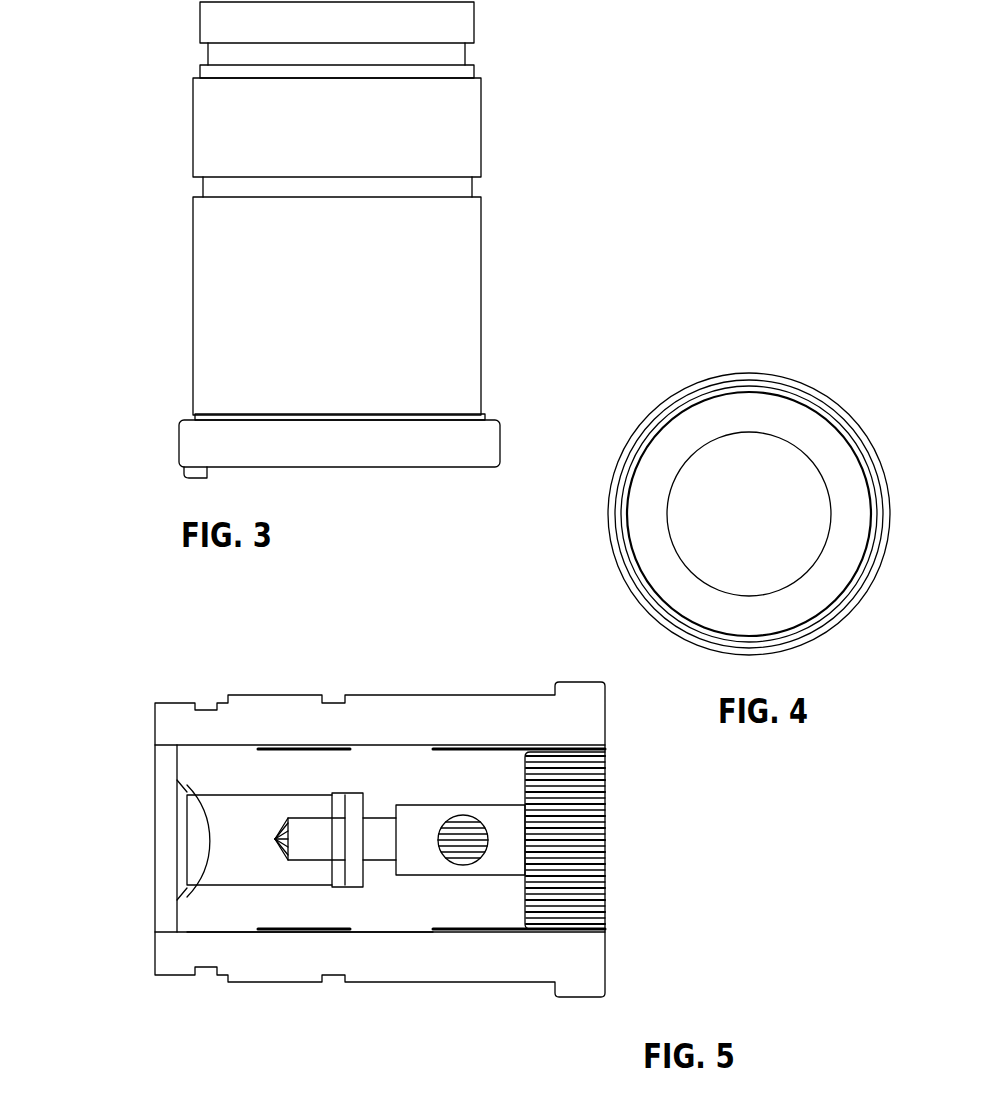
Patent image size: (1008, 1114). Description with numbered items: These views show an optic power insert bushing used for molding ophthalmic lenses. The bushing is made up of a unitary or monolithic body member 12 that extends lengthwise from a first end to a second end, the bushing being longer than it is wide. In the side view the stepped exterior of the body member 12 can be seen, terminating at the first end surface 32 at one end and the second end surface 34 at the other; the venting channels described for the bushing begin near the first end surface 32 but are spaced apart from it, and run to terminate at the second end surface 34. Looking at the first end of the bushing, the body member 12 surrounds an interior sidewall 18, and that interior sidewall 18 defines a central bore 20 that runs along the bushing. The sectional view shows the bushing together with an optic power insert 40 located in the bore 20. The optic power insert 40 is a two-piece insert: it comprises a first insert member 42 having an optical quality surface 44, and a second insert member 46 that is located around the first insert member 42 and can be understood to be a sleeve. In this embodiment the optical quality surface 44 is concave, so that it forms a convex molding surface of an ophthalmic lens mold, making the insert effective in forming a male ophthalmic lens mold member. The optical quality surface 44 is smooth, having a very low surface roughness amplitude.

In FIG. 3, the body member 12 is at (473, 254).
In FIG. 4, the interior sidewall 18 is at (680, 535).
In FIG. 4, the bore 20 is at (766, 528).
In FIG. 3, the first end surface 32 is at (183, 0).
In FIG. 4, the first end surface 32 is at (766, 410).
In FIG. 3, the second end surface 34 is at (200, 478).
In FIG. 5, the optic power insert 40 is at (378, 905).
In FIG. 5, the first insert member 42 is at (233, 863).
In FIG. 5, the optical quality surface 44 is at (210, 843).
In FIG. 5, the second insert member 46 is at (295, 907).